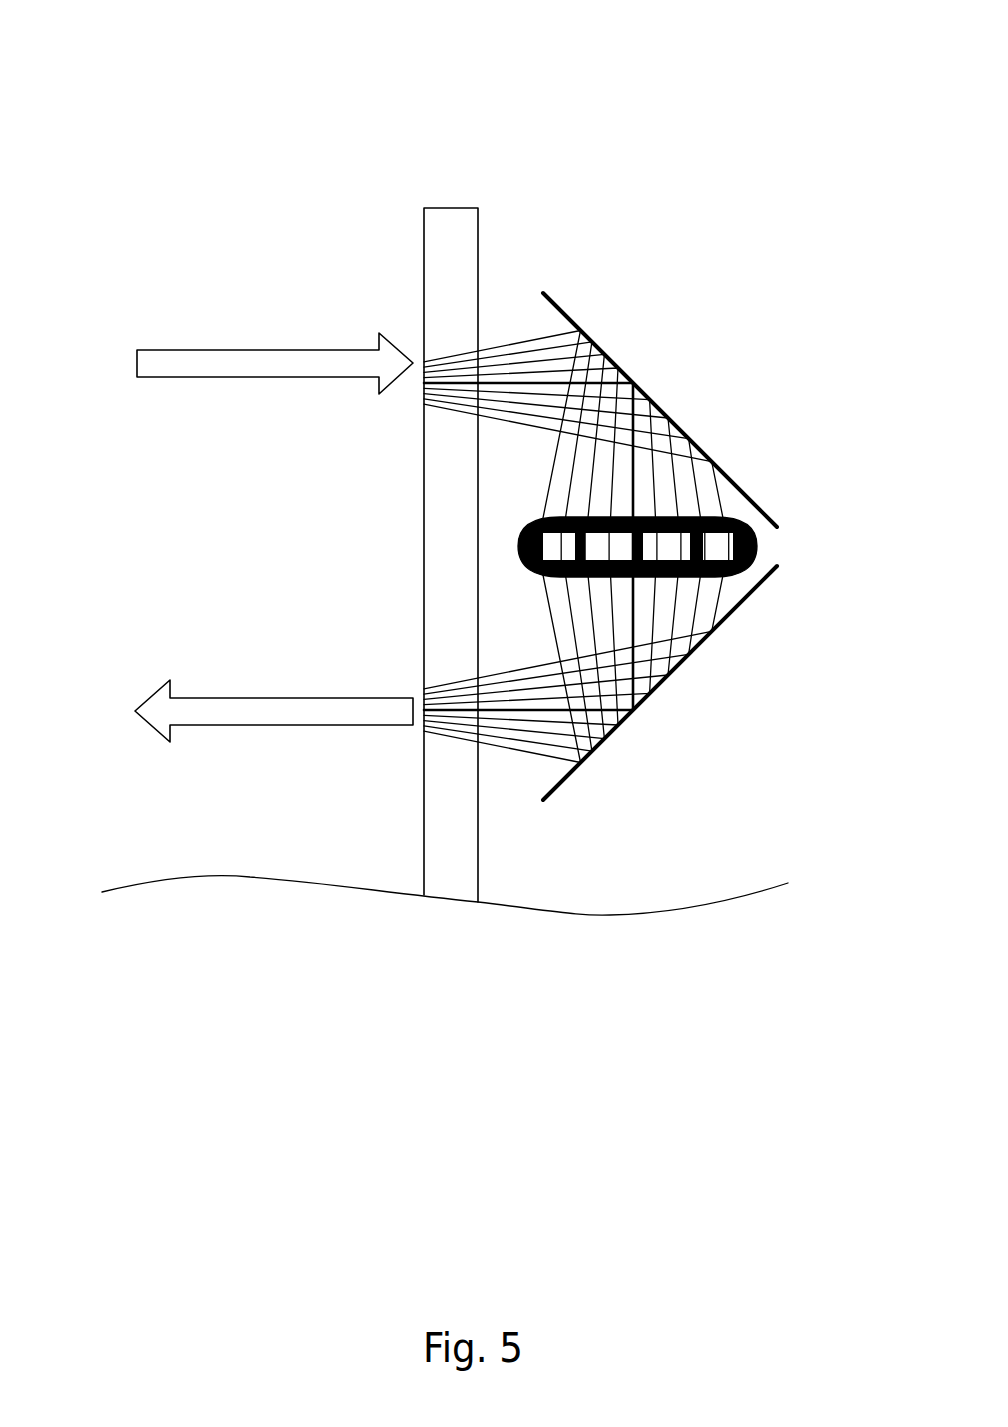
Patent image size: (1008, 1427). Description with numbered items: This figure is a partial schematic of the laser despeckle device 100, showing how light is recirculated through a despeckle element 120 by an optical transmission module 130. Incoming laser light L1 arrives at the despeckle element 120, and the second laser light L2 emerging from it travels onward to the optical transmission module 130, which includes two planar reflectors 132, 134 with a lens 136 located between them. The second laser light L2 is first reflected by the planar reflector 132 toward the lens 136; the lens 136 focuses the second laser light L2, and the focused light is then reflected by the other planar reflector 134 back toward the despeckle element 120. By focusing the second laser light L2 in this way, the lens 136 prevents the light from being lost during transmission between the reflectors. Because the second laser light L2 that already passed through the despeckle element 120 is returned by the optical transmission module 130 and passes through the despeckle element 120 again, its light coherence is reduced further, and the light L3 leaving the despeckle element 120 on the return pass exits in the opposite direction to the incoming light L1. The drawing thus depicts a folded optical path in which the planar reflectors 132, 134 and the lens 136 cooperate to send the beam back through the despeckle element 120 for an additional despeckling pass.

The laser despeckle device 100 is at (68, 42).
The despeckle element 120 is at (452, 213).
The optical transmission module 130 is at (575, 238).
The planar reflector 132 is at (755, 500).
The planar reflector 134 is at (755, 598).
The lens 136 is at (757, 544).
The incident light L1 is at (205, 355).
The second laser light L2 is at (522, 358).
The emitted light L3 is at (220, 705).